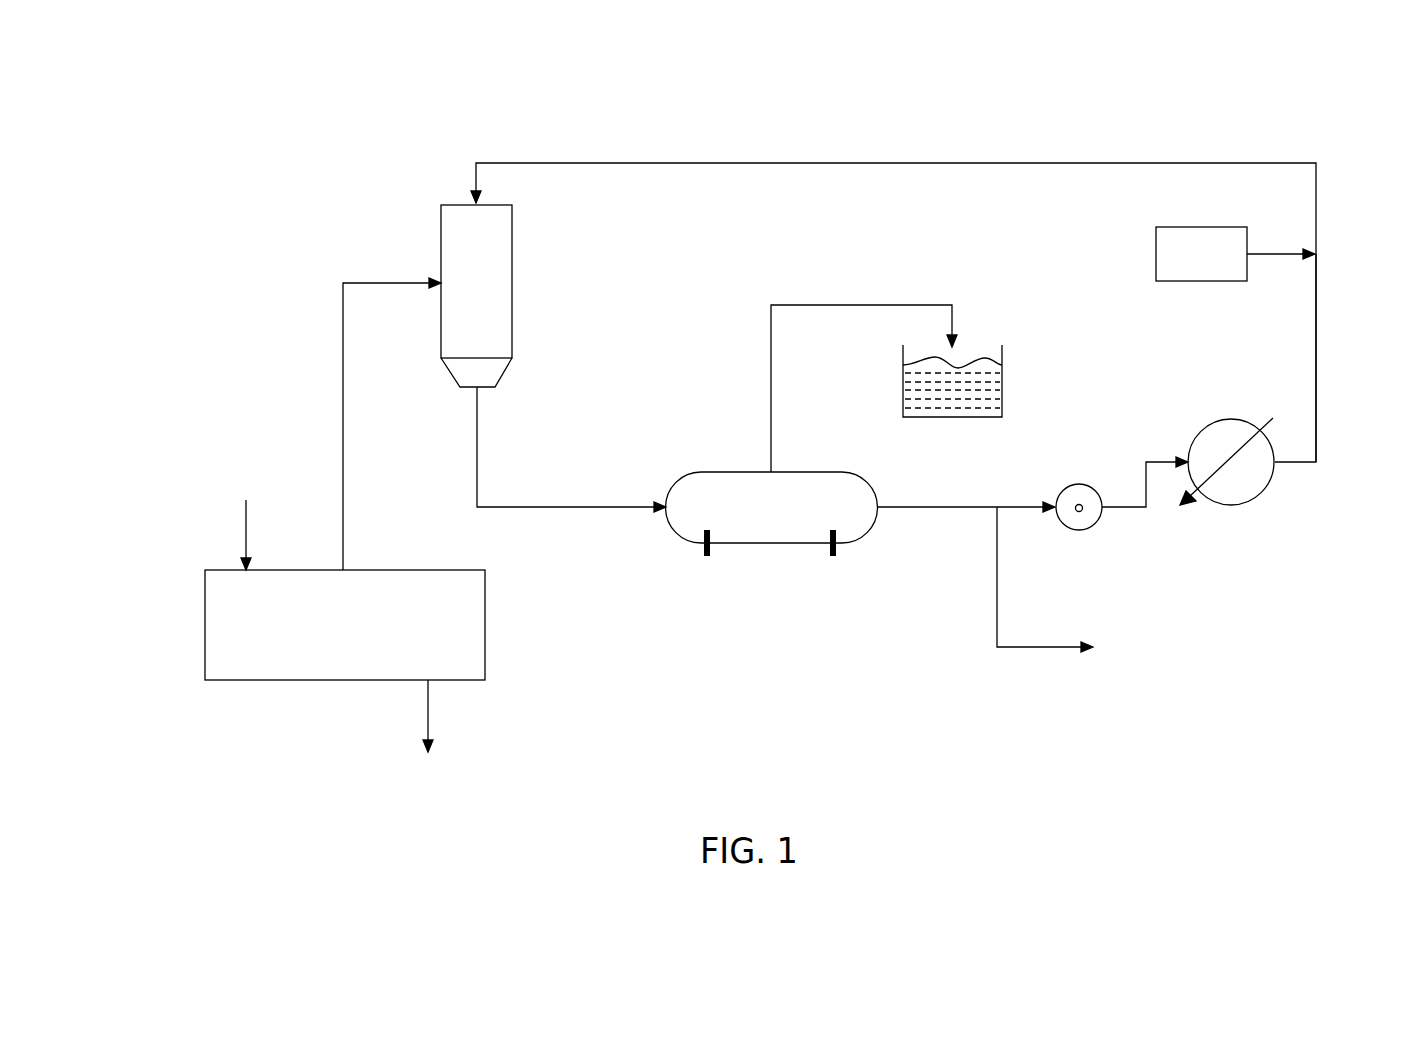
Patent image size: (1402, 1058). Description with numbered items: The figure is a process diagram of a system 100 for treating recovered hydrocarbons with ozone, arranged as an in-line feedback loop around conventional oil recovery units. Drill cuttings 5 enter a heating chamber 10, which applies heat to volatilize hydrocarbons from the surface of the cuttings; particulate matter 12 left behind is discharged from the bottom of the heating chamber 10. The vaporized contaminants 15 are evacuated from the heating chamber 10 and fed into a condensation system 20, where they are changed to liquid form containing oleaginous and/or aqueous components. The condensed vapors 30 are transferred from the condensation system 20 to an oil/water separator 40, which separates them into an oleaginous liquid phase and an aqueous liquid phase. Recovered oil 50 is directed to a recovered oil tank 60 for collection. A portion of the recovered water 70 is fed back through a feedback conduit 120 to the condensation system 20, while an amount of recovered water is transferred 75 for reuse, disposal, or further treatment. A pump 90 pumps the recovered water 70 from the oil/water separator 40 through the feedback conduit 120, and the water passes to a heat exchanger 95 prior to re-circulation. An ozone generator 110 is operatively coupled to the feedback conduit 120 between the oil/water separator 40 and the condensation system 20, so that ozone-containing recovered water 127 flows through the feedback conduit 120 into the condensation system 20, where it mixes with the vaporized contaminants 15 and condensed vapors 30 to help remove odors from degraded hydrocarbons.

The system 100 is at (325, 100).
The drill cuttings 5 is at (247, 523).
The heating chamber 10 is at (345, 625).
The particulate matter 12 is at (431, 733).
The vaporized contaminants 15 is at (337, 318).
The condensation system 20 is at (510, 282).
The ozone-containing recovered water 127 is at (948, 153).
The condensed vapors 30 is at (513, 503).
The oil/water separator 40 is at (772, 514).
The recovered oil 50 is at (857, 300).
The recovered oil tank 60 is at (1005, 378).
The recovered water 70 is at (930, 502).
The transferred recovered water 75 is at (1063, 585).
The pump 90 is at (1079, 480).
The heat exchanger 95 is at (1238, 417).
The ozone generator 110 is at (1235, 254).
The feedback conduit 120 is at (1318, 318).